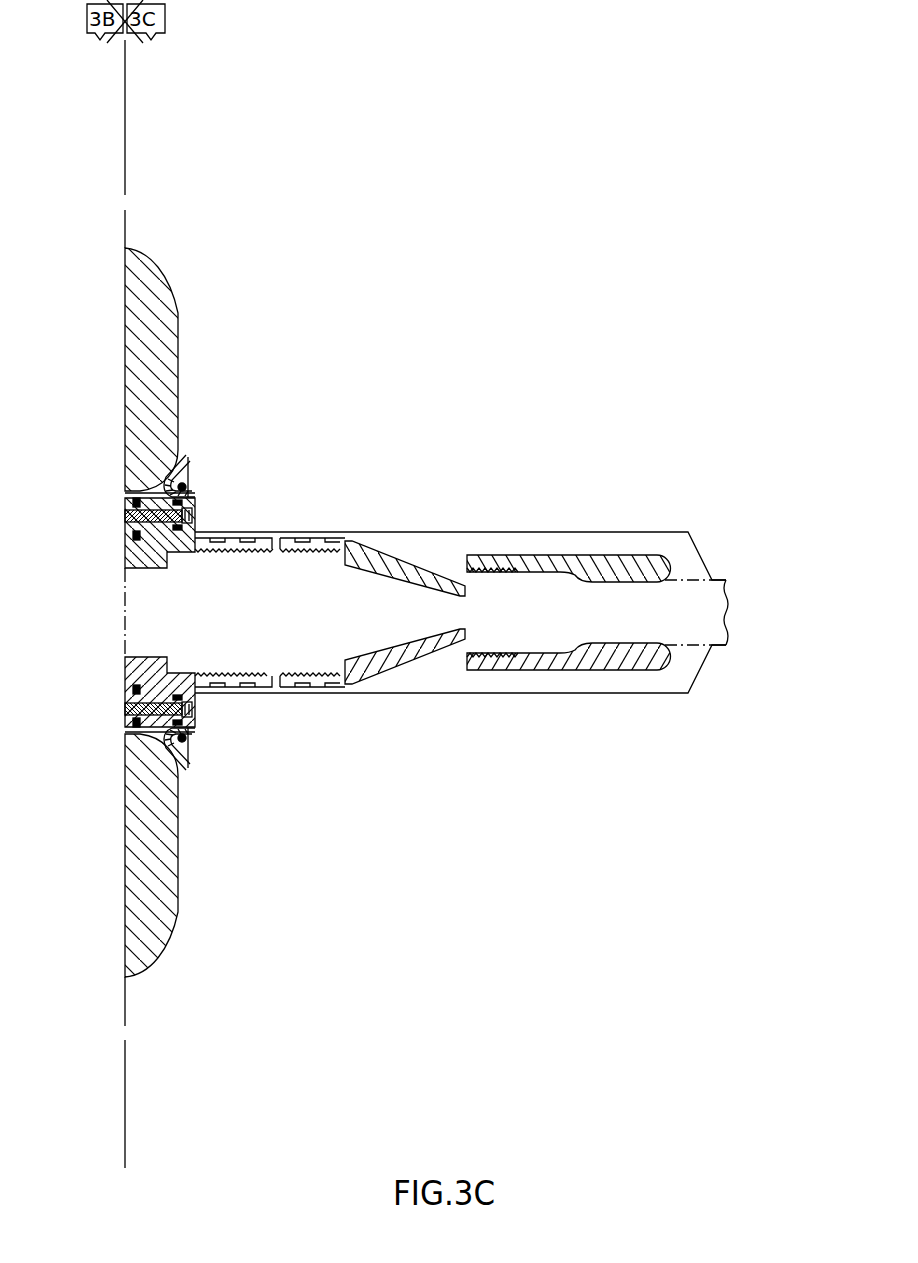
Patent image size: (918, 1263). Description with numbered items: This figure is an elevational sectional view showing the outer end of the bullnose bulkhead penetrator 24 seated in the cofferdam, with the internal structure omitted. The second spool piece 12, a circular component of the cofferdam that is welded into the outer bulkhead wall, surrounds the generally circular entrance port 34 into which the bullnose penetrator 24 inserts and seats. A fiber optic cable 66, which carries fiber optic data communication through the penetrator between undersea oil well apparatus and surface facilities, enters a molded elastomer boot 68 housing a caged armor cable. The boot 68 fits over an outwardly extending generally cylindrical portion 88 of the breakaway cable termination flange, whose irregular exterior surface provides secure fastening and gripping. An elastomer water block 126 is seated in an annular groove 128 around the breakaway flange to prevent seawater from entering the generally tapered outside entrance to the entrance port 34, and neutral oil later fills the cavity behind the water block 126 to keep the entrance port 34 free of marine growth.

The second spool piece 12 is at (168, 381).
The bullnose bulkhead penetrator 24 is at (565, 485).
The entrance port 34 is at (127, 496).
The fiber optic cable 66 is at (722, 580).
The molded elastomer boot 68 is at (688, 553).
The outwardly extending cylindrical portion 88 is at (263, 540).
The elastomer water block 126 is at (186, 462).
The annular groove 128 is at (193, 500).